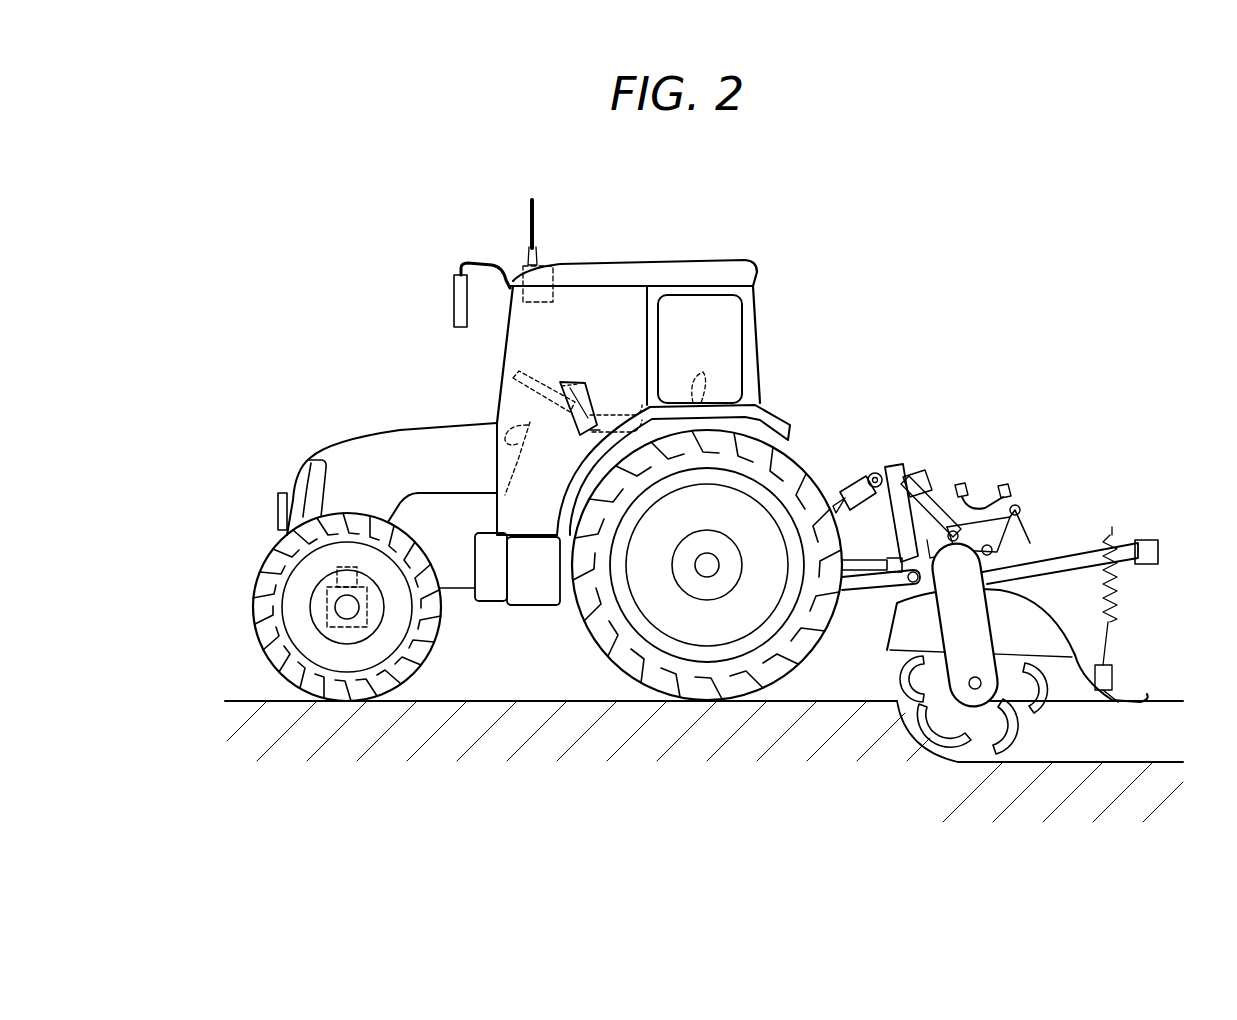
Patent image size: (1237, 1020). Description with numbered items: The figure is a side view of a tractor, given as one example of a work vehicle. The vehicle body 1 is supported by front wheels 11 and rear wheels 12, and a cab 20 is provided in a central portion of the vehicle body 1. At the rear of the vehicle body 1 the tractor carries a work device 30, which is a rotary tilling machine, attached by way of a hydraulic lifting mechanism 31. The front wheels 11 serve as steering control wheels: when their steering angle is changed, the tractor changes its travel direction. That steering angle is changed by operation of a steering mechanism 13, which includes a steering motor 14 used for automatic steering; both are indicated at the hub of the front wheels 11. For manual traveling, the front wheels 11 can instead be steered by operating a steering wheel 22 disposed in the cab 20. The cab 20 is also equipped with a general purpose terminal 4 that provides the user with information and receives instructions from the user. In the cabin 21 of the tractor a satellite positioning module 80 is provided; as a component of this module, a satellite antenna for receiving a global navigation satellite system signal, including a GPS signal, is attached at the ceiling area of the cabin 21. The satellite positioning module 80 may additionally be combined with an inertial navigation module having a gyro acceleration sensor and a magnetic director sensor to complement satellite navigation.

The vehicle body 1 is at (683, 491).
The general purpose terminal 4 is at (592, 382).
The front wheels 11 is at (345, 702).
The rear wheels 12 is at (722, 680).
The steering mechanism 13 is at (322, 607).
The steering motor 14 is at (318, 574).
The cab 20 is at (572, 383).
The cabin 21 is at (733, 273).
The steering wheel 22 is at (535, 370).
The work device 30 is at (975, 742).
The hydraulic lifting mechanism 31 is at (912, 467).
The satellite positioning module 80 is at (543, 255).